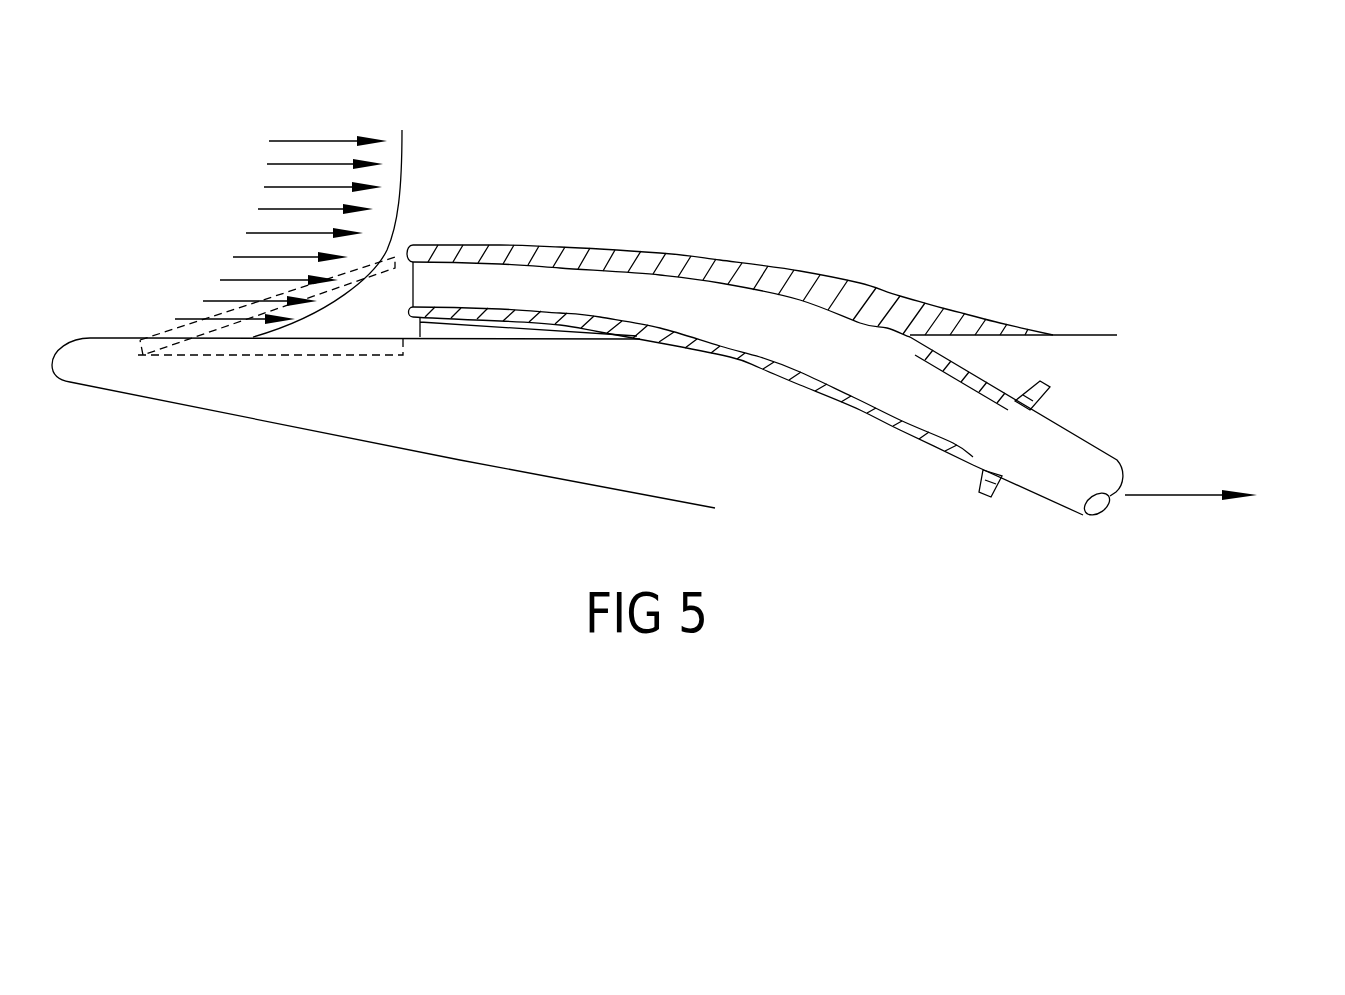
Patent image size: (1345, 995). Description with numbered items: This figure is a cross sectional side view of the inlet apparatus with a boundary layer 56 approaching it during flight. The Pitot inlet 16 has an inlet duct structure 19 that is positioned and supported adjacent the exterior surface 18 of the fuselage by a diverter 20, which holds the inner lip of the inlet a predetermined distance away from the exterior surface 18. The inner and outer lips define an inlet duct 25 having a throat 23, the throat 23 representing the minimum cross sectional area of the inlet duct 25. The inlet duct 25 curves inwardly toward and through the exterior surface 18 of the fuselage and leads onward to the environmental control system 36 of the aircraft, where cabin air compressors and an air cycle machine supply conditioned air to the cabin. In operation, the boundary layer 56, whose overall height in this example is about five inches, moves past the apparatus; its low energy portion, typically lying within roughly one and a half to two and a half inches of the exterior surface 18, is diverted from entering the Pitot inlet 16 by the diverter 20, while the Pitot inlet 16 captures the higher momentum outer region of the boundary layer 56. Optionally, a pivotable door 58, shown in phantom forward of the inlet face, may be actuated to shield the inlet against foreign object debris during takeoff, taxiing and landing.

The Pitot inlet 16 is at (636, 185).
The exterior surface 18 is at (67, 338).
The inlet duct structure 19 is at (715, 258).
The diverter 20 is at (427, 336).
The throat 23 is at (423, 288).
The inlet duct 25 is at (845, 360).
The environmental control system 36 is at (1165, 611).
The boundary layer 56 is at (315, 140).
The pivotable door 58 is at (385, 257).